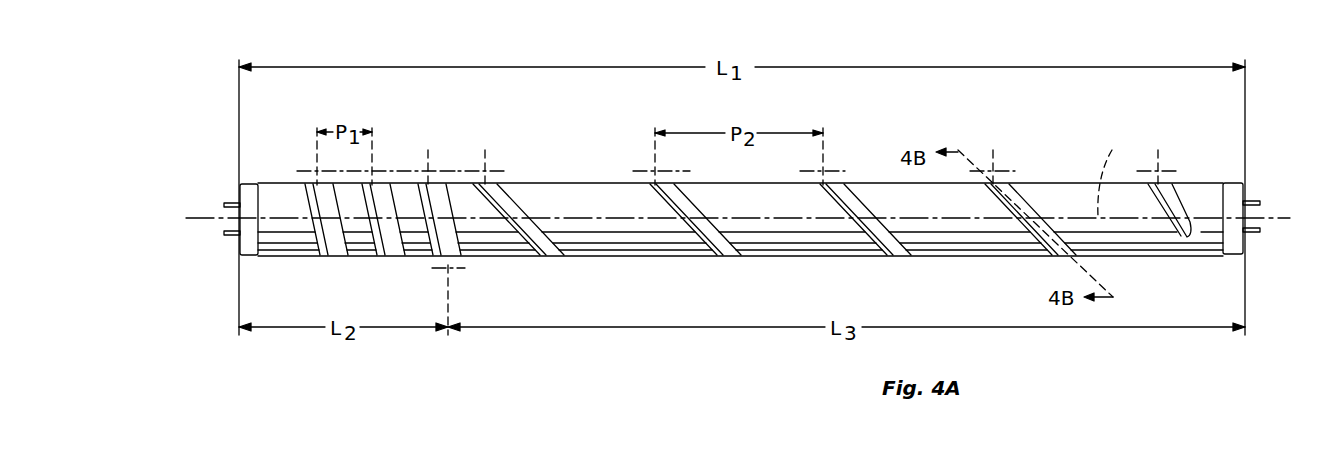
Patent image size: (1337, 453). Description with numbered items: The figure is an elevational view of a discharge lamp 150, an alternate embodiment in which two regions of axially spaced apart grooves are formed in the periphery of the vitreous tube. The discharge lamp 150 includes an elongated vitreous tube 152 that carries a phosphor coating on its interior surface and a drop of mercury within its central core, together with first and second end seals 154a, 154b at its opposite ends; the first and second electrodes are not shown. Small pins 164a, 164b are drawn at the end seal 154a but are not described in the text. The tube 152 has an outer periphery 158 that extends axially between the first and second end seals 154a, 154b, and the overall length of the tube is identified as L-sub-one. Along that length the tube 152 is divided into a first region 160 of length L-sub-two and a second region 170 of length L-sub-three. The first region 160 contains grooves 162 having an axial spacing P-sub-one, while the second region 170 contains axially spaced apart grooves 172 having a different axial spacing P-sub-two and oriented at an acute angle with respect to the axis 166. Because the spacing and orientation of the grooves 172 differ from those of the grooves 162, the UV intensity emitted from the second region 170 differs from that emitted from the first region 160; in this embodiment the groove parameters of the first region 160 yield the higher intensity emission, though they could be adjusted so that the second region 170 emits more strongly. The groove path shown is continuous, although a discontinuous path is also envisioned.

The discharge lamp 150 is at (732, 193).
The vitreous tube 152 is at (555, 182).
The first end seal 154a is at (256, 183).
The second end seal 154b is at (1243, 183).
The outer periphery 158 is at (594, 183).
The first region 160 is at (356, 277).
The grooves 162 is at (440, 262).
The first pin 164a is at (229, 202).
The second pin 164b is at (229, 237).
The axis 166 is at (1106, 165).
The second region 170 is at (832, 238).
The grooves 172 is at (566, 256).